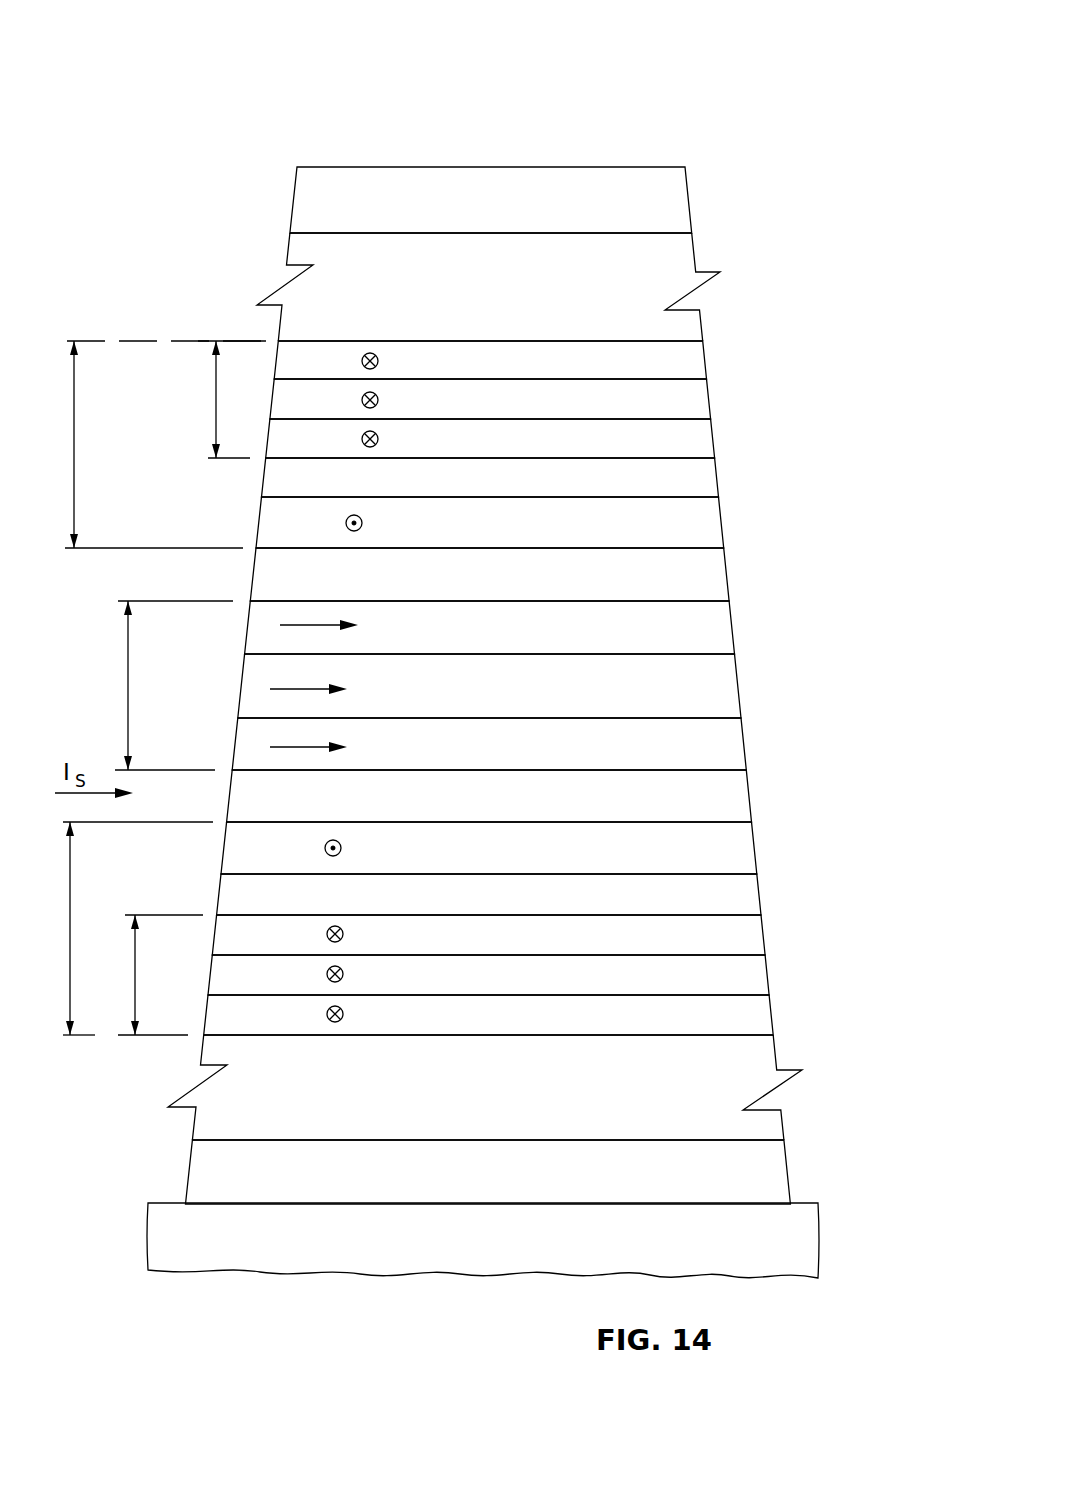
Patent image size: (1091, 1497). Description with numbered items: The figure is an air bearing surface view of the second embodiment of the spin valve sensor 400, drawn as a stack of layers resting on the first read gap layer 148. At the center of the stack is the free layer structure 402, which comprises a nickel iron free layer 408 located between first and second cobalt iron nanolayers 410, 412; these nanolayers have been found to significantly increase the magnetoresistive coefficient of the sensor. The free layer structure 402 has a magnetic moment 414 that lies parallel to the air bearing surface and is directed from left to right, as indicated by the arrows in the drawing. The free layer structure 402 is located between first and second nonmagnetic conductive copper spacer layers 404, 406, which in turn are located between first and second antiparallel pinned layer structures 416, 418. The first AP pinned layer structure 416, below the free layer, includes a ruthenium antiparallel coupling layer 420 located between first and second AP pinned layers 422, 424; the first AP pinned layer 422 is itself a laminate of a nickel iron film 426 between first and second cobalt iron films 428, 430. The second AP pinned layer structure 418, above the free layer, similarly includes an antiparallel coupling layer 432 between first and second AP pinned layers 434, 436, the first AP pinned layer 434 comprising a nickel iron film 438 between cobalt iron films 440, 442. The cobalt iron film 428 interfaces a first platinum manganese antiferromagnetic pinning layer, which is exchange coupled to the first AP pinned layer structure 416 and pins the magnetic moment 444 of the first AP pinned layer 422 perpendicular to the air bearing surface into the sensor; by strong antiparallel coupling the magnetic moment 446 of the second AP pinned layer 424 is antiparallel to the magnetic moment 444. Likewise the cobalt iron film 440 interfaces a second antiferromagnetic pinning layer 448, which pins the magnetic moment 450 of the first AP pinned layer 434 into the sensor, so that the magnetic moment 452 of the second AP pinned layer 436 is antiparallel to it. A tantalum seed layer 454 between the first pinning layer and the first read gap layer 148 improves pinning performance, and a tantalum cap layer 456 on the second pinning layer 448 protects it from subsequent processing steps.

The spin valve sensor 400 is at (650, 134).
The cap layer 456 is at (689, 204).
The second antiferromagnetic pinning layer 448 is at (694, 254).
The first cobalt iron film 440 is at (704, 363).
The nickel iron film 438 is at (708, 403).
The second cobalt iron film / first antiferromagnetic pinning layer 442 is at (712, 440).
The antiparallel coupling layer 432 is at (716, 480).
The second AP pinned layer 436 is at (721, 532).
The second nonmagnetic conductive spacer layer 406 is at (726, 577).
The second nanolayer 412 is at (731, 632).
The free layer 408 is at (738, 690).
The first nanolayer 410 is at (744, 750).
The first nonmagnetic conductive spacer layer 404 is at (749, 800).
The second AP pinned layer 424 is at (754, 850).
The antiparallel coupling layer 420 is at (759, 897).
The second cobalt iron film 430 is at (763, 935).
The nickel iron film 426 is at (767, 973).
The first cobalt iron film 428 is at (771, 1020).
The seed layer 454 is at (788, 1182).
The first read gap layer 148 is at (820, 1236).
The second AP pinned layer structure 418 is at (244, 277).
The free layer structure 402 is at (262, 424).
The first AP pinned layer structure 416 is at (219, 1087).
The first AP pinned layer 434 is at (216, 387).
The first AP pinned layer 422 is at (135, 985).
The magnetic moment 450 is at (361, 361).
The magnetic moment 452 is at (345, 523).
The magnetic moment 446 is at (324, 848).
The magnetic moment 444 is at (326, 934).
The magnetic moment 414 is at (302, 625).